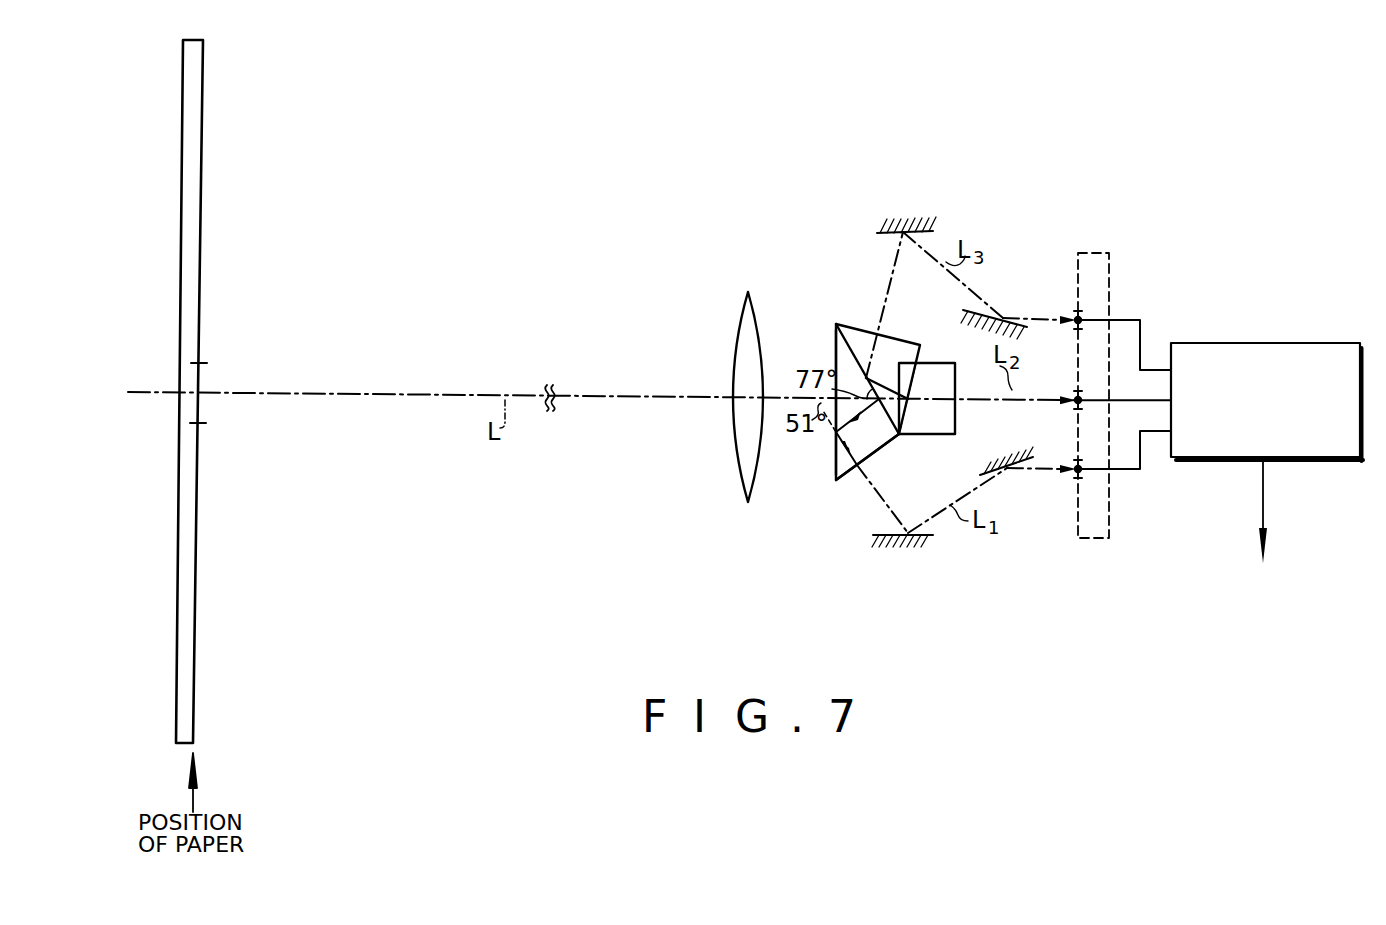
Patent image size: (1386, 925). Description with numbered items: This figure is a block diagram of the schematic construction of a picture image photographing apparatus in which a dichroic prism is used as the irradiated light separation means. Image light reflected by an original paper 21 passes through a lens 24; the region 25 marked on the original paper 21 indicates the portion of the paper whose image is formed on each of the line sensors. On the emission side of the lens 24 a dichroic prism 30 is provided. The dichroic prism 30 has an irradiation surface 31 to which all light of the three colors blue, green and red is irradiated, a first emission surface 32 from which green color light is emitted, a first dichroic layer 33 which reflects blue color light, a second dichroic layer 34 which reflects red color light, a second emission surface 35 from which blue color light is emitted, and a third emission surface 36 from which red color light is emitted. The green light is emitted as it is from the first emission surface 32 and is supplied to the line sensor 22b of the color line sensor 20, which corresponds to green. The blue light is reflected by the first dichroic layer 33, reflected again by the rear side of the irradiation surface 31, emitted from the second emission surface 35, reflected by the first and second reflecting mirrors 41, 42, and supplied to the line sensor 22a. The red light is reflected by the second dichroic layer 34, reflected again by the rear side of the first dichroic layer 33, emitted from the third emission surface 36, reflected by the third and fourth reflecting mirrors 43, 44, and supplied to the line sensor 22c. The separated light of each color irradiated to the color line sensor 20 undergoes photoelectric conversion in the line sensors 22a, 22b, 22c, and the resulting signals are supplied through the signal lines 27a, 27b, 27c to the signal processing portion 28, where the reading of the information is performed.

The color line sensor 20 is at (1091, 538).
The original paper 21 is at (205, 205).
The line sensor 22a is at (1072, 474).
The line sensor 22b is at (1072, 400).
The line sensor 22c is at (1074, 313).
The lens 24 is at (744, 346).
The region of the original paper 25 is at (205, 400).
The signal line 27a is at (1128, 470).
The signal line 27b is at (1116, 399).
The signal line 27c is at (1128, 318).
The signal processing portion 28 is at (1267, 343).
The dichroic prism 30 is at (850, 330).
The irradiation surface 31 is at (836, 357).
The first emission surface 32 is at (955, 384).
The first dichroic layer 33 is at (843, 344).
The second dichroic layer 34 is at (918, 370).
The second emission surface 35 is at (878, 452).
The third emission surface 36 is at (872, 336).
The first reflecting mirror 41 is at (895, 545).
The second reflecting mirror 42 is at (1011, 460).
The third reflecting mirror 43 is at (912, 221).
The fourth reflecting mirror 44 is at (964, 322).